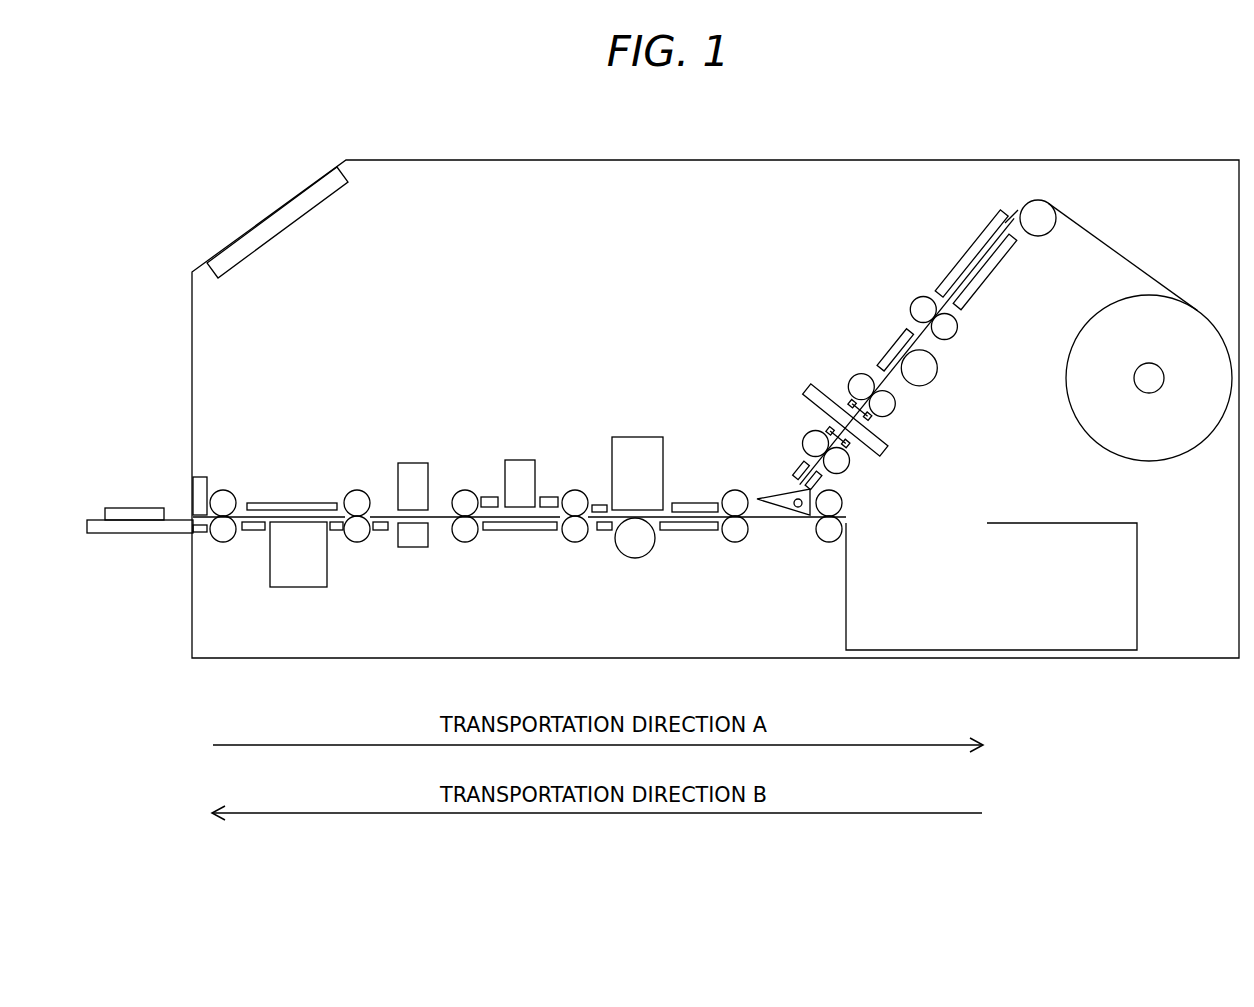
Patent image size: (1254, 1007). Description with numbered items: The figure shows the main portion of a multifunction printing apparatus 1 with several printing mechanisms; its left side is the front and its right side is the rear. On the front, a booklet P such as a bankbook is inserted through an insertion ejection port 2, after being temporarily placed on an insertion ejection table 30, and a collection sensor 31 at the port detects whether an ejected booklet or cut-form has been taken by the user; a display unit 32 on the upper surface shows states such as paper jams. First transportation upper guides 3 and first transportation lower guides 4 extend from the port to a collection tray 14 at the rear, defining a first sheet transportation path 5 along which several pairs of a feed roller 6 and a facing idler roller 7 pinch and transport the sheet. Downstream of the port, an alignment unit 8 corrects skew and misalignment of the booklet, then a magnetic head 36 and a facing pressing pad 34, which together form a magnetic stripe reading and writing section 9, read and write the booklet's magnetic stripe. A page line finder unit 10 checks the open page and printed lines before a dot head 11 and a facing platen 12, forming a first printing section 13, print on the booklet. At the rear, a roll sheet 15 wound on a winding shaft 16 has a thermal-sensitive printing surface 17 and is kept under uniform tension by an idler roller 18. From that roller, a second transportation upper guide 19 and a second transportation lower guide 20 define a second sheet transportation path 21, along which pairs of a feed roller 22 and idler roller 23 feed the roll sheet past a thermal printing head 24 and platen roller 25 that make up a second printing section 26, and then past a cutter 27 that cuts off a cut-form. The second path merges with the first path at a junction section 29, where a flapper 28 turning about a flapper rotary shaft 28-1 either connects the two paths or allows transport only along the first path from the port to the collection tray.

The multifunction printing apparatus 1 is at (720, 160).
The insertion ejection port 2 is at (188, 516).
The first transportation upper guides 3 is at (290, 502).
The first transportation lower guides 4 is at (204, 534).
The first sheet transportation path 5 is at (239, 515).
The feed roller 6 is at (222, 490).
The idler roller 7 is at (225, 542).
The alignment unit 8 is at (290, 589).
The magnetic stripe reading and writing section 9 is at (387, 487).
The page line finder unit 10 is at (519, 458).
The dot head 11 is at (640, 437).
The platen 12 is at (635, 558).
The first printing section 13 is at (637, 409).
The collection tray 14 is at (1137, 577).
The roll sheet 15 is at (1200, 442).
The winding shaft 16 is at (1135, 385).
The printing surface 17 is at (1125, 258).
The idler roller 18 is at (1040, 224).
The second transportation upper guide 19 is at (966, 250).
The second transportation lower guide 20 is at (995, 272).
The second sheet transportation path 21 is at (1012, 220).
The feed roller 22 is at (920, 297).
The idler roller 23 is at (955, 332).
The thermal printing head 24 is at (893, 345).
The platen roller 25 is at (937, 378).
The second printing section 26 is at (907, 351).
The cutter 27 is at (808, 385).
The flapper 28 is at (781, 530).
The flapper rotary shaft 28-1 is at (797, 508).
The junction section 29 is at (786, 552).
The insertion ejection table 30 is at (108, 534).
The collection sensor 31 is at (194, 480).
The display unit 32 is at (323, 170).
The pressing pad 34 is at (412, 462).
The magnetic head 36 is at (412, 548).
The booklet P is at (115, 508).